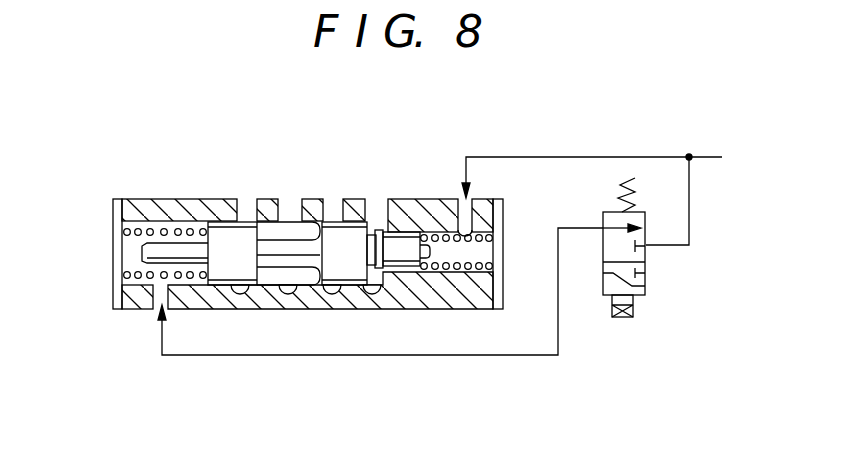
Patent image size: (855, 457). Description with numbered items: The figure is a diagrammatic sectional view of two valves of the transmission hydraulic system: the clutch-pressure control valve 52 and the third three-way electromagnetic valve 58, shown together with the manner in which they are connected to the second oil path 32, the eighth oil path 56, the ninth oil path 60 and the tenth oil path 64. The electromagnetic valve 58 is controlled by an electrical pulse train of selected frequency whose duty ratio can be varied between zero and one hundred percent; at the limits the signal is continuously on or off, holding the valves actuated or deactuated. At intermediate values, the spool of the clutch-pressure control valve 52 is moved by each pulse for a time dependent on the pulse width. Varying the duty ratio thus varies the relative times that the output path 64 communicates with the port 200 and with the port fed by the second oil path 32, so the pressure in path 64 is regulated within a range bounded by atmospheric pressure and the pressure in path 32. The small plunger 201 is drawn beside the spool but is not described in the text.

The clutch-pressure control valve 52 is at (104, 194).
The port 200 is at (247, 198).
The tenth oil path 64 is at (292, 197).
The second oil path 32 is at (335, 185).
The plunger 201 is at (383, 215).
The ninth oil path 60 is at (705, 155).
The third three-way electromagnetic valve 58 is at (645, 289).
The eighth oil path 56 is at (265, 357).